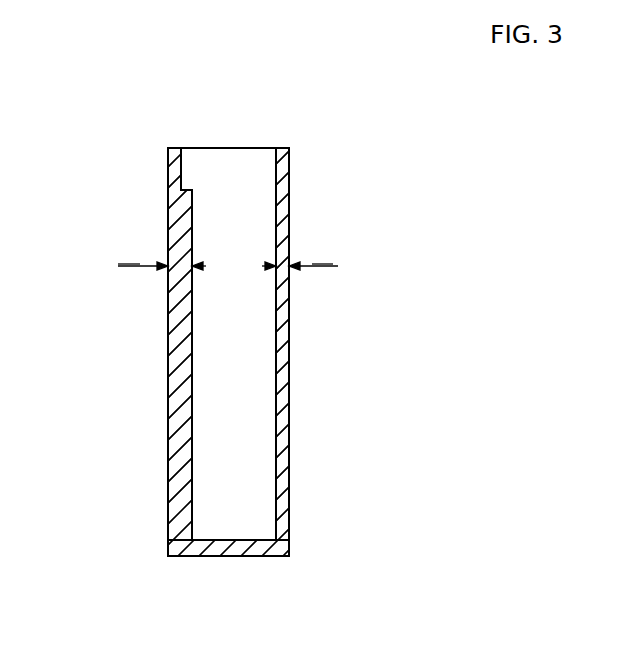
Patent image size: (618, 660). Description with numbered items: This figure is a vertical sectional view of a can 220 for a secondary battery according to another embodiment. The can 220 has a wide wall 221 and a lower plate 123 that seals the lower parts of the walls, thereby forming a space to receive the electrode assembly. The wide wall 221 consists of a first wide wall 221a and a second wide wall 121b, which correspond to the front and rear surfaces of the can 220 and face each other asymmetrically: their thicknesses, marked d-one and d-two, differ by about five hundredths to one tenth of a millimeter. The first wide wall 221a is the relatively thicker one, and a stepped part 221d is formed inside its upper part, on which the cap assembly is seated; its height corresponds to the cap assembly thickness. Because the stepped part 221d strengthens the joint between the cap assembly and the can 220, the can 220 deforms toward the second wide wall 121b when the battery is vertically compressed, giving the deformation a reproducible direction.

The can 220 is at (309, 347).
The wide wall 221 is at (309, 350).
The first wide wall 221a is at (177, 383).
The second wide wall 121b is at (280, 439).
The stepped part 221d is at (186, 173).
The lower plate 123 is at (227, 547).